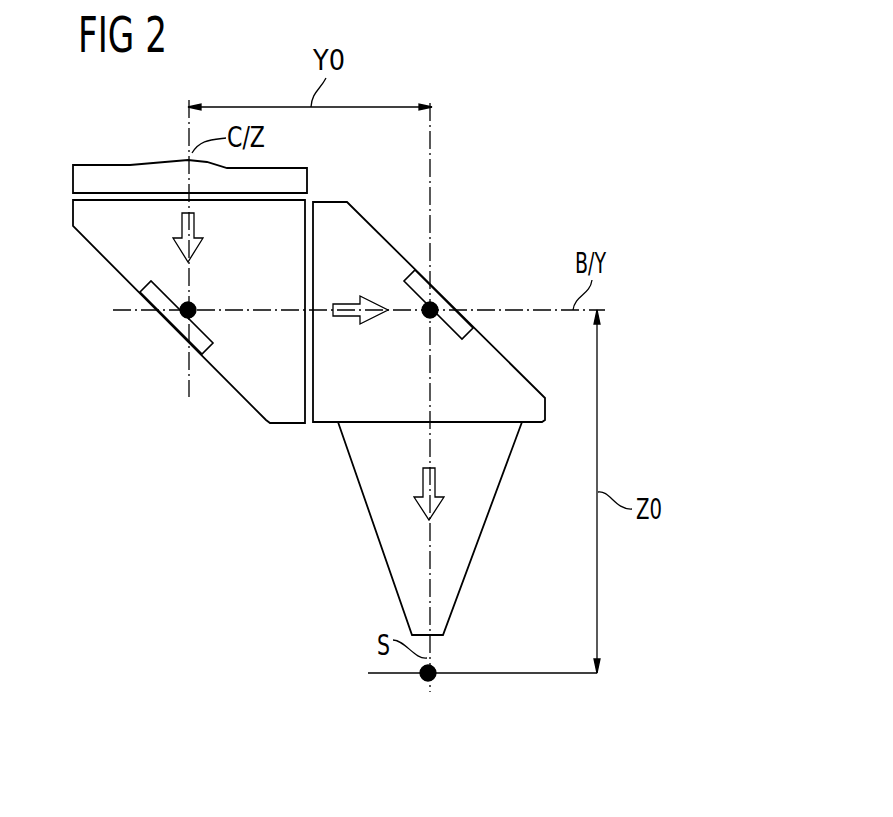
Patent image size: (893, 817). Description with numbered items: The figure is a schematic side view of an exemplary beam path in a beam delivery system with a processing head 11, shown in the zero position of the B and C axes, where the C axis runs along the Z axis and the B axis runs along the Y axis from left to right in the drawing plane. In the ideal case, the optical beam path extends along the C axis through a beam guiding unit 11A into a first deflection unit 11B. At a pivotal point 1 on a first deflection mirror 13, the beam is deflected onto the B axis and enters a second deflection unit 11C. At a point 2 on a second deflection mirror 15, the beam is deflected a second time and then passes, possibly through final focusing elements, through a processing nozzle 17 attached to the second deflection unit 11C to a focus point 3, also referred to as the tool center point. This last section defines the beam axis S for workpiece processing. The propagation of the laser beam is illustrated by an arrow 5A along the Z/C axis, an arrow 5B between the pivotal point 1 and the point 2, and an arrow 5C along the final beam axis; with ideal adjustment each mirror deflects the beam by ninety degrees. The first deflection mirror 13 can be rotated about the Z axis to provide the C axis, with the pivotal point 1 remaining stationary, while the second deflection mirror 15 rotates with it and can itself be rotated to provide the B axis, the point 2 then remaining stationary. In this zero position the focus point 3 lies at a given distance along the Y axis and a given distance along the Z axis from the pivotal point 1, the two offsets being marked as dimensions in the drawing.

The pivotal point 1 is at (196, 301).
The point 2 is at (441, 302).
The focus point 3 is at (433, 683).
The arrow 5A is at (195, 222).
The arrow 5B is at (349, 320).
The arrow 5C is at (433, 473).
The processing head 11 is at (396, 377).
The beam guiding unit 11A is at (128, 176).
The first deflection unit 11B is at (262, 402).
The second deflection unit 11C is at (521, 382).
The first deflection mirror 13 is at (173, 320).
The second deflection mirror 15 is at (413, 273).
The processing nozzle 17 is at (363, 476).